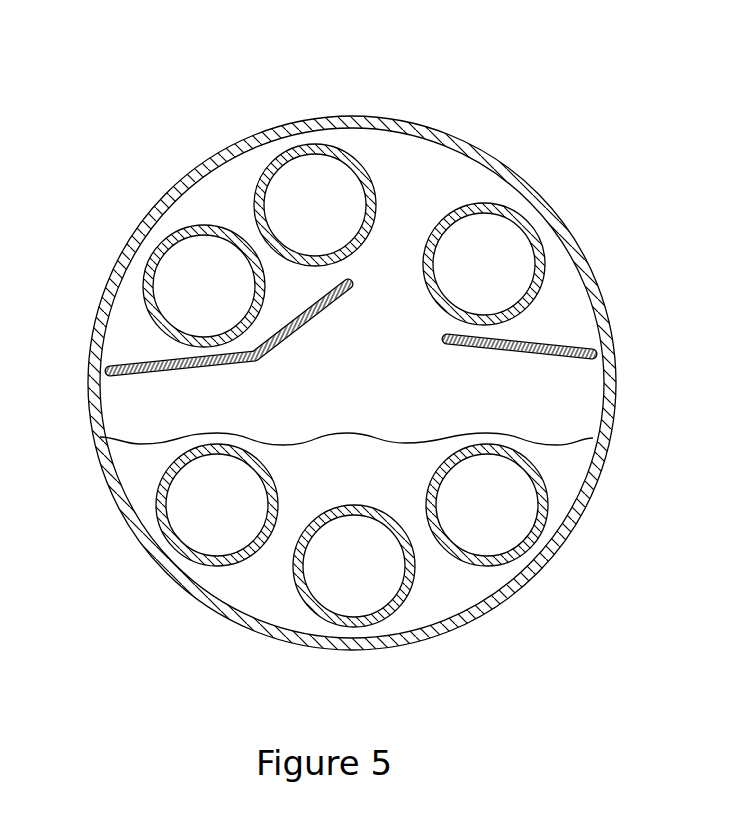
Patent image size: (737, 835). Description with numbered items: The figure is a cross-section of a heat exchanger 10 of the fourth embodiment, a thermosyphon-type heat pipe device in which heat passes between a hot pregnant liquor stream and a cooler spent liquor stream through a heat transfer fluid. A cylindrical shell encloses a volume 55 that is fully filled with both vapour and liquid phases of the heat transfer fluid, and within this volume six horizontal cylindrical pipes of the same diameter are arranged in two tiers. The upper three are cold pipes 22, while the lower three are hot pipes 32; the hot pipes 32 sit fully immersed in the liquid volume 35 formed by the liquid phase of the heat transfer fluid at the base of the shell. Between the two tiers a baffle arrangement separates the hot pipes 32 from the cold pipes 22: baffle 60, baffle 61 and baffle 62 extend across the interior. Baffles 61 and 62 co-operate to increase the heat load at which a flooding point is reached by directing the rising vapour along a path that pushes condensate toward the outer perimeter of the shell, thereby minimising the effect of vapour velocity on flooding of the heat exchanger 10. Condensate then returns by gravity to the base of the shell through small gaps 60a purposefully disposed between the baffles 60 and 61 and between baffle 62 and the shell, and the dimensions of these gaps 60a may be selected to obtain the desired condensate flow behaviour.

The heat exchanger 10 is at (613, 240).
The cold pipes 22 is at (190, 280).
The hot pipes 32 is at (315, 583).
The liquid volume 35 is at (568, 461).
The volume 55 is at (567, 305).
The baffle 60 is at (521, 358).
The gaps 60a is at (108, 373).
The baffle 61 is at (170, 387).
The baffle 62 is at (296, 330).